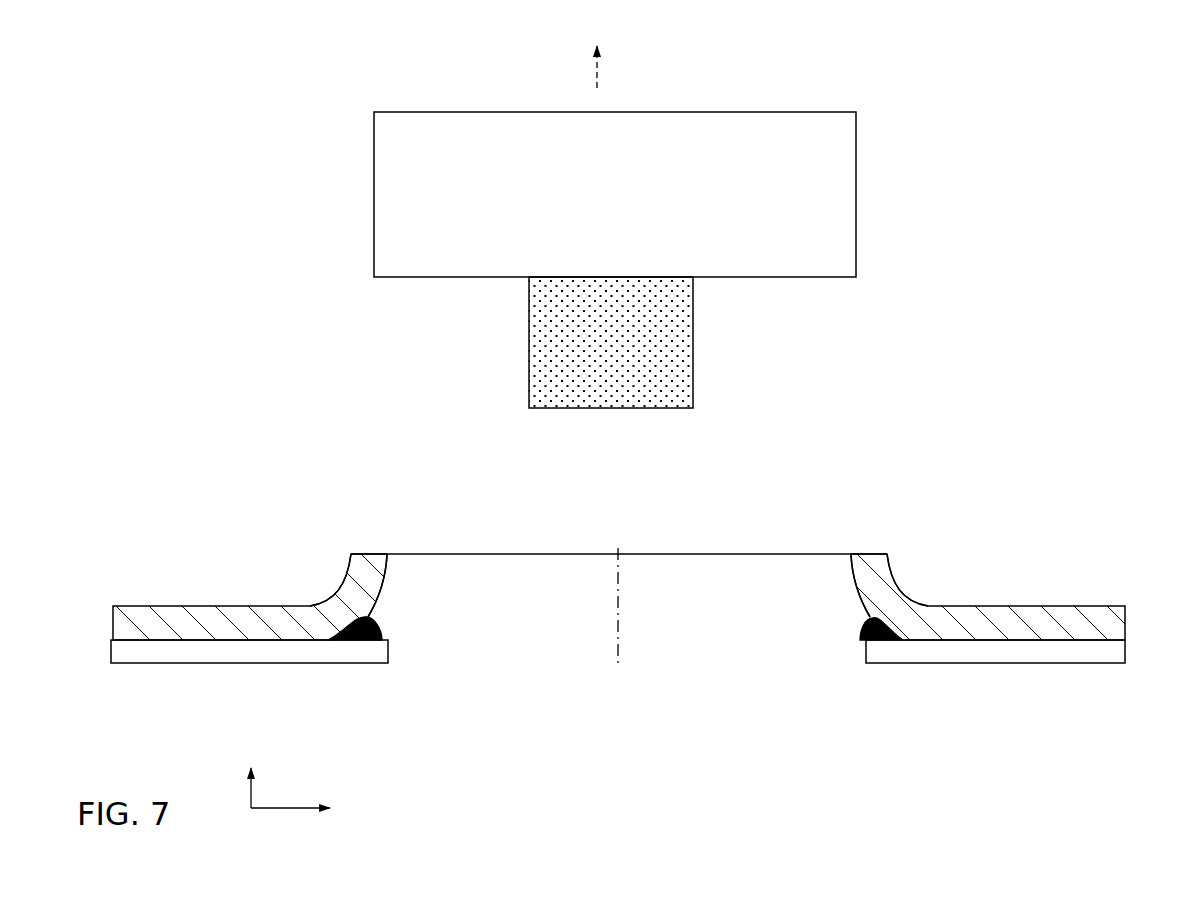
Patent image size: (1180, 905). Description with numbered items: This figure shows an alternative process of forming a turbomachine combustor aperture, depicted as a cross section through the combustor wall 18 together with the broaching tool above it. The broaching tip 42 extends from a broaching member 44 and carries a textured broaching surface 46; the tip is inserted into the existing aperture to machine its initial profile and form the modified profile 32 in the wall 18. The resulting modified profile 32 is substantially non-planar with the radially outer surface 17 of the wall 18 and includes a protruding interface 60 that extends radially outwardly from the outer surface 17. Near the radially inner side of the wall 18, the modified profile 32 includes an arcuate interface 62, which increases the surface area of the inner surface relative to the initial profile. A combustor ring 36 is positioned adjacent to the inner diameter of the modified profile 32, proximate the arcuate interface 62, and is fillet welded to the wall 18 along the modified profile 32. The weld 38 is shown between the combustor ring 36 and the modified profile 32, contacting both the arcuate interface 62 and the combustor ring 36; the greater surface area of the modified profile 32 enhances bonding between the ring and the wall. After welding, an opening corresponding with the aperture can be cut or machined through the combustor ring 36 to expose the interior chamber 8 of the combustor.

The interior chamber 8 is at (692, 779).
The radially outer surface 17 is at (175, 550).
The wall 18 is at (1117, 617).
The modified profile 32 is at (398, 588).
The combustor ring 36 is at (313, 648).
The weld 38 is at (377, 617).
The broaching tip 42 is at (615, 227).
The broaching member 44 is at (619, 212).
The broaching surface 46 is at (663, 372).
The protruding interface 60 is at (317, 553).
The arcuate interface 62 is at (855, 608).